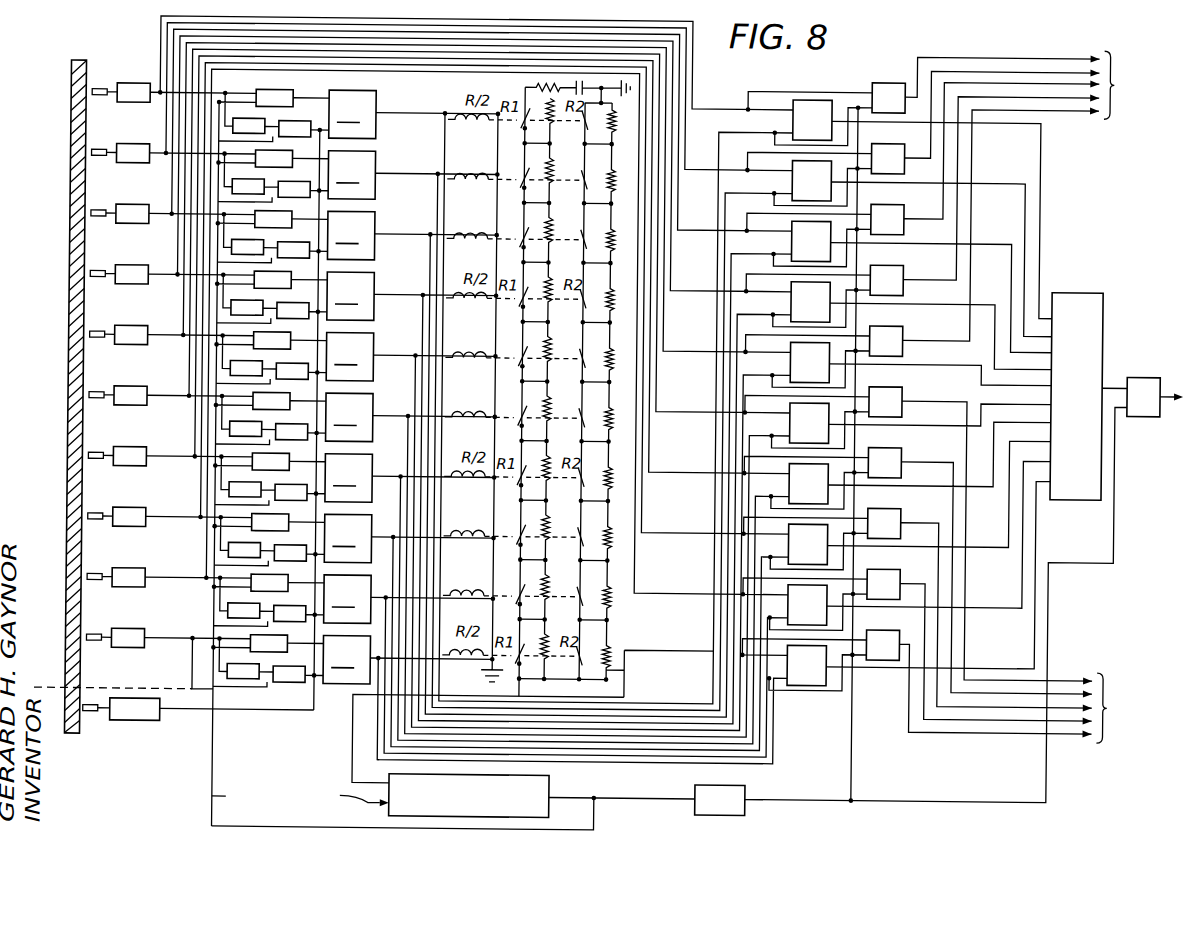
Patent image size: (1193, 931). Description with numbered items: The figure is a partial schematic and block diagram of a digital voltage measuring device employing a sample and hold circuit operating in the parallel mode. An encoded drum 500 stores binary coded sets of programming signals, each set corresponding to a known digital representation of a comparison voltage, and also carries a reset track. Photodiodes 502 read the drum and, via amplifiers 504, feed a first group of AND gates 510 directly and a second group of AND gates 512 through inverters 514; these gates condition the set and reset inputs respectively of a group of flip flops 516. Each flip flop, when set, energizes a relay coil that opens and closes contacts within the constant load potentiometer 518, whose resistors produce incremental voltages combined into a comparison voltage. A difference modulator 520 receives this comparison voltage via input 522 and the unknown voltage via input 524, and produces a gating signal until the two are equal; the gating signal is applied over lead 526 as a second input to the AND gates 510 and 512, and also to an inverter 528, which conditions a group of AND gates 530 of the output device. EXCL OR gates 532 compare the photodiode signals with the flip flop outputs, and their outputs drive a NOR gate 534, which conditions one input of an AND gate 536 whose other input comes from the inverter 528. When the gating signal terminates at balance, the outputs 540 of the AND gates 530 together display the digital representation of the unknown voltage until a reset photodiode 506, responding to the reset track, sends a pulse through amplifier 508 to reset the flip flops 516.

The encoded drum 500 is at (68, 484).
The photodiodes 502 is at (97, 100).
The amplifiers 504 is at (141, 88).
The reset photodiode 506 is at (92, 716).
The amplifier 508 is at (140, 725).
The AND gates 510 is at (283, 93).
The AND gates 512 is at (304, 114).
The inverters 514 is at (260, 122).
The flip flops 516 is at (370, 99).
The constant load potentiometer 518 is at (532, 716).
The difference modulator 520 is at (553, 790).
The input 522 is at (381, 750).
The input 524 is at (342, 796).
The lead 526 is at (216, 799).
The inverter 528 is at (749, 812).
The AND gates 530 is at (884, 80).
The EXCL OR gates 532 is at (790, 119).
The NOR gate 534 is at (1074, 290).
The AND gate 536 is at (1144, 411).
The outputs 540 is at (1142, 397).